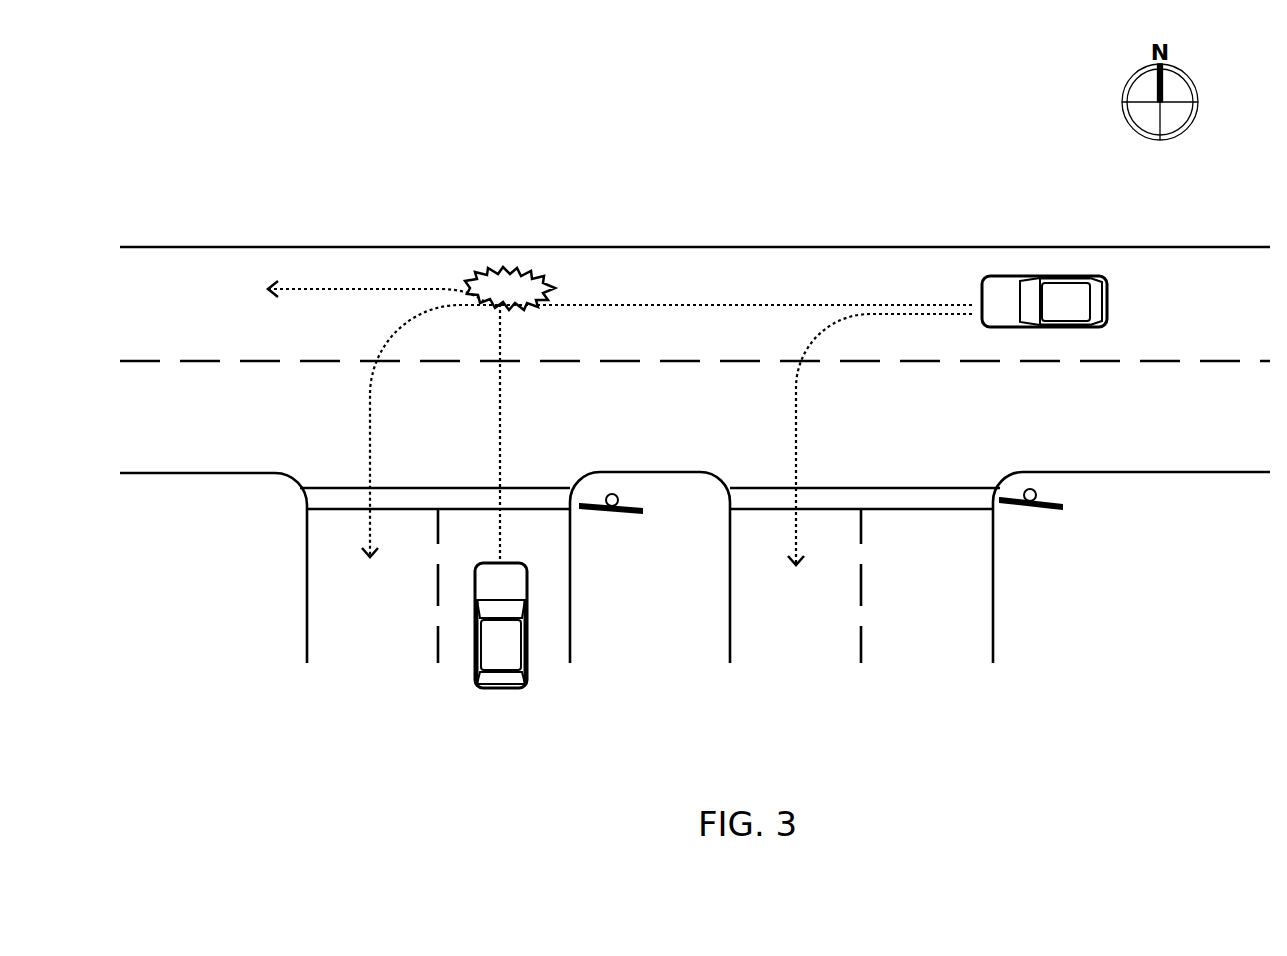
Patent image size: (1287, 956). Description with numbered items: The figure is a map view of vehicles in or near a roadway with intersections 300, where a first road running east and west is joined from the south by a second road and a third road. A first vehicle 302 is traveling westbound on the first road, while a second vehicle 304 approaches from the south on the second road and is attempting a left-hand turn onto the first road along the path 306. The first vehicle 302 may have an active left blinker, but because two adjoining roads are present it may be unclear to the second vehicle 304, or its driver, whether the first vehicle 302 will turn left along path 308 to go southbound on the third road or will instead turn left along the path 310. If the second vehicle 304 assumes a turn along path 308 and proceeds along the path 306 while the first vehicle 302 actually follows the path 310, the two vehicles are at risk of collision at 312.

The intersections 300 is at (380, 130).
The first vehicle 302 is at (1002, 275).
The second vehicle 304 is at (527, 598).
The path 306 is at (376, 283).
The path 308 is at (880, 439).
The path 310 is at (667, 431).
The collision risk location 312 is at (513, 268).